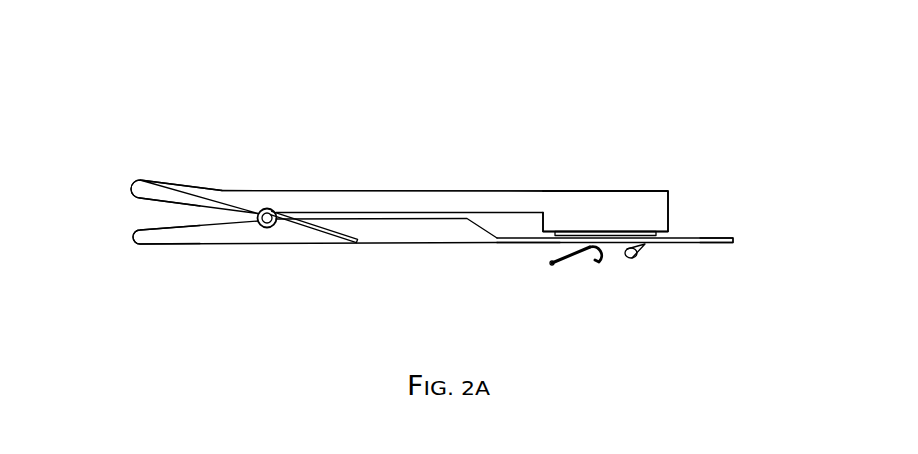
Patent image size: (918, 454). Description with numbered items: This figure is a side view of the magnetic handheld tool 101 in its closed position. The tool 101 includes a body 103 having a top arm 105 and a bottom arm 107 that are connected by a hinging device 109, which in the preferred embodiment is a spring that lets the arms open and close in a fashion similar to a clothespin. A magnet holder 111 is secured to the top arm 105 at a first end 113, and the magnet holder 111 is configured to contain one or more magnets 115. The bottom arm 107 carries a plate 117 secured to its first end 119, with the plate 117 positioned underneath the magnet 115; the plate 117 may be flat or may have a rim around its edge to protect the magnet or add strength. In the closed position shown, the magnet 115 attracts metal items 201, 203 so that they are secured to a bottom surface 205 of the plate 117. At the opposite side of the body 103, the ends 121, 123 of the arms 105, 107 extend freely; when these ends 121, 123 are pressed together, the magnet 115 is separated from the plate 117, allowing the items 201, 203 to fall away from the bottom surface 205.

The tool 101 is at (152, 52).
The body 103 is at (261, 160).
The top arm 105 is at (393, 190).
The bottom arm 107 is at (433, 242).
The hinging device 109 is at (307, 233).
The magnet holder 111 is at (597, 190).
The first end 113 is at (645, 153).
The magnet 115 is at (667, 233).
The plate 117 is at (683, 244).
The first end 119 is at (724, 261).
The end 121 is at (139, 138).
The end 123 is at (138, 274).
The metal item 201 is at (554, 266).
The metal item 203 is at (633, 260).
The bottom surface 205 is at (513, 257).